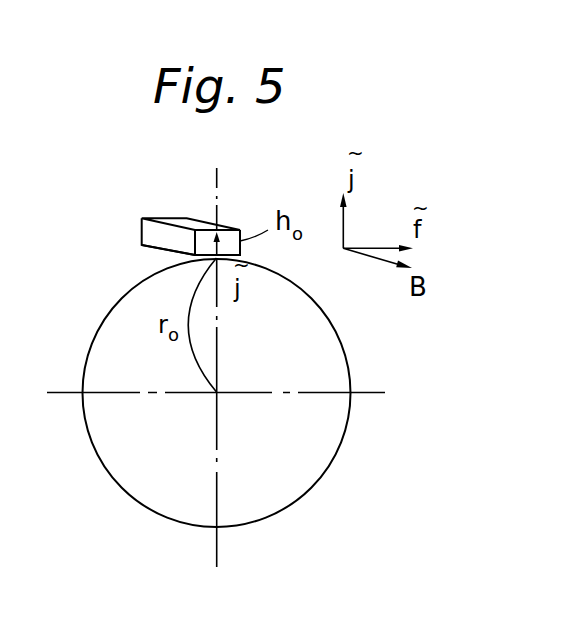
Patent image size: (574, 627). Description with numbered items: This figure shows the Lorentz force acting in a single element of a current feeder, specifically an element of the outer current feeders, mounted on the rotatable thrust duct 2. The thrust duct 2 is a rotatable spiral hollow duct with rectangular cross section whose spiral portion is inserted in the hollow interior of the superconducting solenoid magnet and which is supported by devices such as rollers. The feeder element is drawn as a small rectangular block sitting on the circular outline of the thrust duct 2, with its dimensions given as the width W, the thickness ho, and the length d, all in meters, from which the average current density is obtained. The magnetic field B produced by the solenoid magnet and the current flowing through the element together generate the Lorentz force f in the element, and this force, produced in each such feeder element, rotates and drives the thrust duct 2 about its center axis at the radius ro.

The thrust duct 2 is at (350, 362).
The width W is at (200, 229).
The length d is at (146, 247).